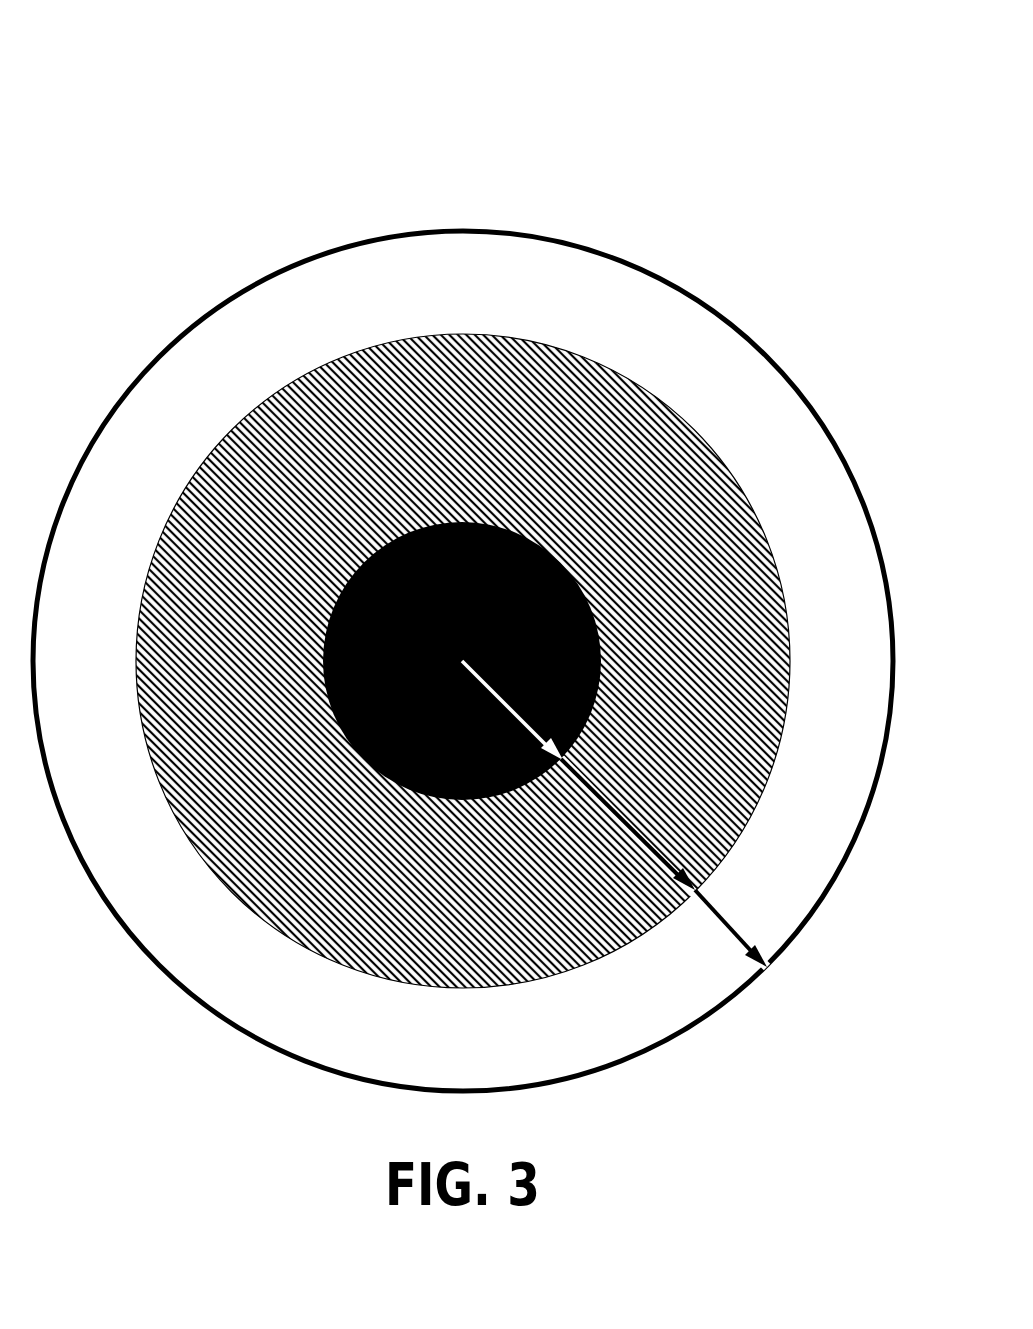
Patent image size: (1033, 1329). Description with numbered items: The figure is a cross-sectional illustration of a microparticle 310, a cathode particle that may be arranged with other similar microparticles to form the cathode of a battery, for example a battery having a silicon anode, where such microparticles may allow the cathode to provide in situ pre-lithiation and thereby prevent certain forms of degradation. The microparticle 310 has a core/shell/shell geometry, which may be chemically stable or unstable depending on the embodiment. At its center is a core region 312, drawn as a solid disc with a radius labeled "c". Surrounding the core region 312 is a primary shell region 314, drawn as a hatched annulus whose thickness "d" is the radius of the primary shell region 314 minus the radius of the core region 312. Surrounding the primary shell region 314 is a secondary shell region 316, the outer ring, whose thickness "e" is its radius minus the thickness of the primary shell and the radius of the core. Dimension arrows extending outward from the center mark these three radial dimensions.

The microparticle 310 is at (460, 552).
The core region 312 is at (576, 568).
The primary shell region 314 is at (539, 336).
The secondary shell region 316 is at (338, 240).